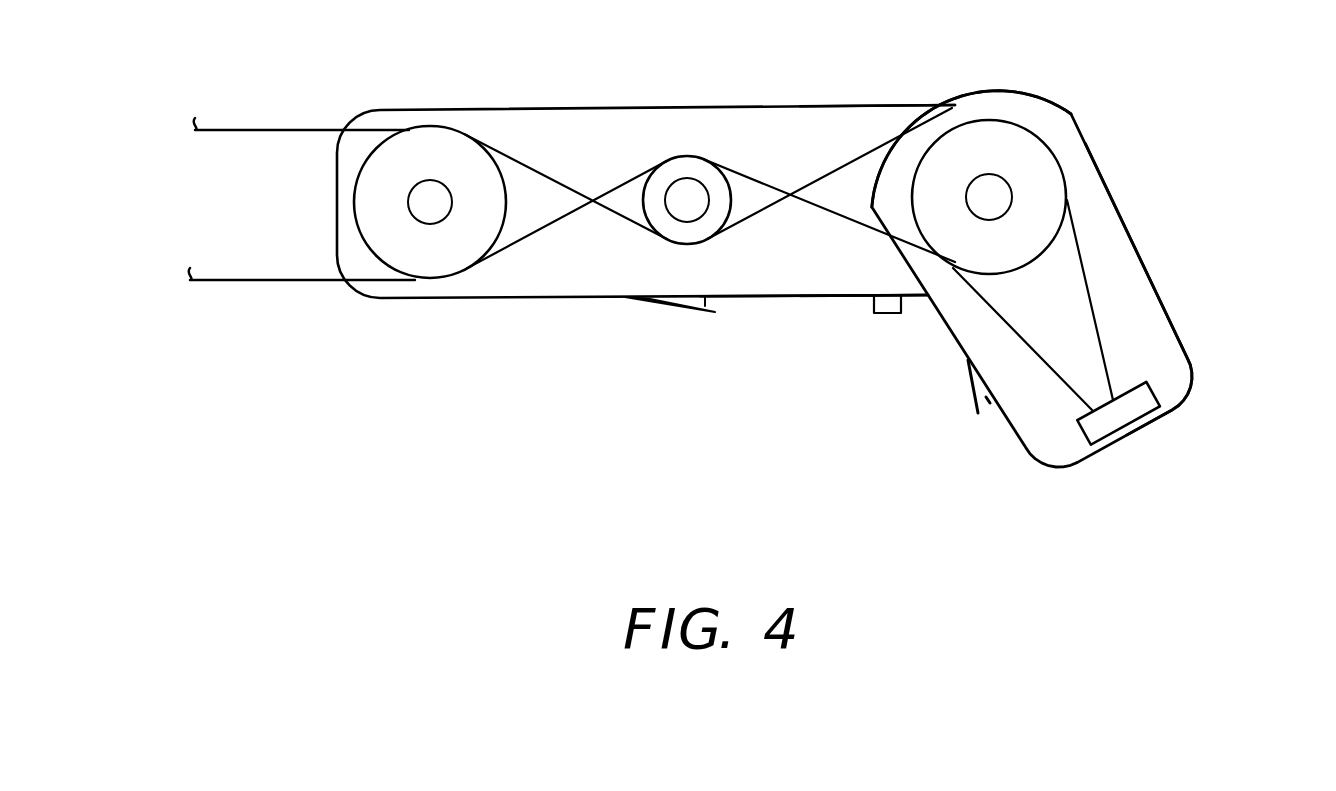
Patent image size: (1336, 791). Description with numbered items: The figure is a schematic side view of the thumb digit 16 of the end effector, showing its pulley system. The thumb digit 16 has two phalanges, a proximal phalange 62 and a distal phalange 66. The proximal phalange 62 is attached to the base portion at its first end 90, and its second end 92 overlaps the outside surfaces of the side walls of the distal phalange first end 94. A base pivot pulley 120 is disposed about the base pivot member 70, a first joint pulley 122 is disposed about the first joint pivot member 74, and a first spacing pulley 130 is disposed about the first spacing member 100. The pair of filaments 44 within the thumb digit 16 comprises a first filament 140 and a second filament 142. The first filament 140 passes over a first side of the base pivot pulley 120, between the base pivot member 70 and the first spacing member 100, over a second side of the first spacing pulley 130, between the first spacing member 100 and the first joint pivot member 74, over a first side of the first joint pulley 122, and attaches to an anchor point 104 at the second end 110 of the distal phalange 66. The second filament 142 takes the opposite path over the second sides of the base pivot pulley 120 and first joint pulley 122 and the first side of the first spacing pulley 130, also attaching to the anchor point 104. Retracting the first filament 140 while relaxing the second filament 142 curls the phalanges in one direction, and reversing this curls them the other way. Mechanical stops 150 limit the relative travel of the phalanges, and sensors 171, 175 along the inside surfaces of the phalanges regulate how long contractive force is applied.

The thumb digit 16 is at (1160, 297).
The pair of filaments 44 is at (292, 221).
The proximal phalange 62 is at (830, 280).
The distal phalange 66 is at (1110, 243).
The base pivot member 70 is at (433, 187).
The first joint pivot member 74 is at (990, 187).
The first end of the proximal phalange 90 is at (372, 110).
The proximal phalange second end 92 is at (948, 103).
The distal phalange first end 94 is at (1090, 173).
The first spacing member 100 is at (690, 193).
The anchor point 104 is at (1190, 383).
The second end of the distal phalange 110 is at (1090, 453).
The base pivot pulley 120 is at (447, 260).
The first joint pulley 122 is at (1033, 170).
The first spacing pulley 130 is at (670, 227).
The first filament 140 is at (298, 130).
The second filament 142 is at (275, 283).
The mechanical stop 150 is at (880, 317).
The sensor 171 is at (687, 310).
The sensor 175 is at (975, 407).